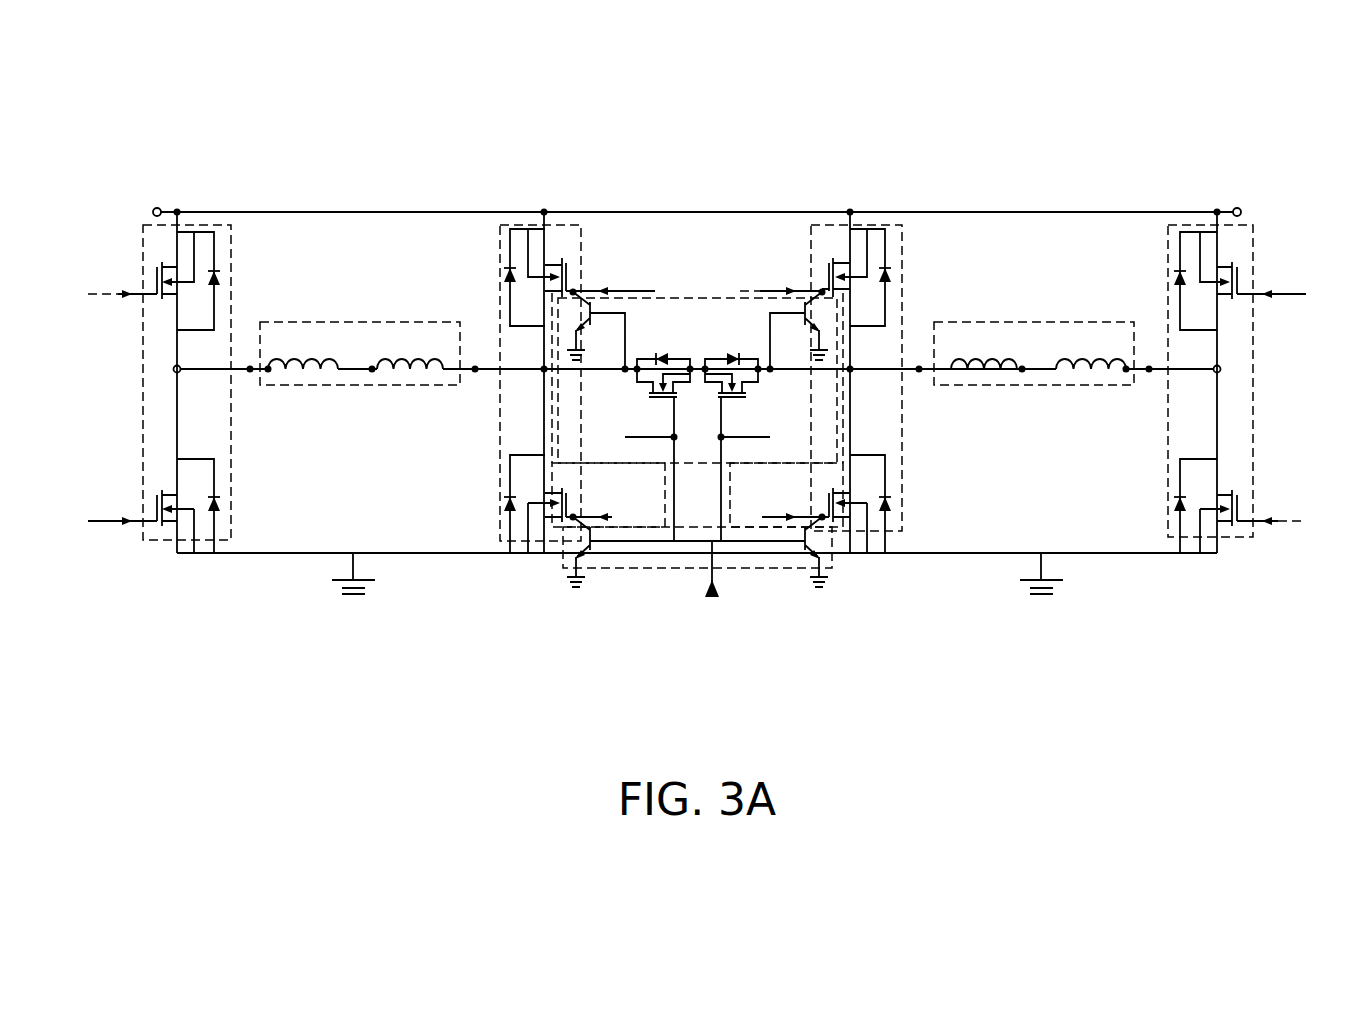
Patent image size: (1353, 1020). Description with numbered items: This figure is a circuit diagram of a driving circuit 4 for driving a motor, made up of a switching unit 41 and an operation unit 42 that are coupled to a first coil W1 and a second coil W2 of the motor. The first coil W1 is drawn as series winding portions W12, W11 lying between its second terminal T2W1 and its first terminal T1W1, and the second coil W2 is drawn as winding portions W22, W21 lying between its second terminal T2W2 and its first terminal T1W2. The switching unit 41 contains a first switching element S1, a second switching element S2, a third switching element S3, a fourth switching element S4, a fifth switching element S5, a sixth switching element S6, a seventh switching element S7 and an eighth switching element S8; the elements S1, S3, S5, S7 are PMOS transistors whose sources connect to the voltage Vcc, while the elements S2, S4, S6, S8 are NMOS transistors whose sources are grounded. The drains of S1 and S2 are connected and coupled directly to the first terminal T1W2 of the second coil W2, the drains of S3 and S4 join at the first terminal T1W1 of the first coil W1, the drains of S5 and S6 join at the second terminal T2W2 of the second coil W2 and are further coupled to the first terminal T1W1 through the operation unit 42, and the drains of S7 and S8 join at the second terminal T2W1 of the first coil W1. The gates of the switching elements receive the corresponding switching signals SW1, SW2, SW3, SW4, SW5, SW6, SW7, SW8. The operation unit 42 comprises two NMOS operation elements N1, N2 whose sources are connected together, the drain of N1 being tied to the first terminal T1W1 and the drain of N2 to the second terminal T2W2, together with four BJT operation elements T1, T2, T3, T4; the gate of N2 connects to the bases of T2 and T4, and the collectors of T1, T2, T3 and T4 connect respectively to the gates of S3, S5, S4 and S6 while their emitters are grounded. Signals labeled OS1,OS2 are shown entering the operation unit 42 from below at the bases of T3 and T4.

The driving circuit 4 is at (311, 104).
The switching unit 41 is at (699, 350).
The operation unit 42 is at (697, 445).
The first switching element S1 is at (1213, 281).
The second switching element S2 is at (1213, 506).
The third switching element S3 is at (541, 277).
The fourth switching element S4 is at (542, 504).
The fifth switching element S5 is at (854, 277).
The sixth switching element S6 is at (854, 504).
The seventh switching element S7 is at (183, 281).
The eighth switching element S8 is at (183, 506).
The switching signal SW1 is at (1279, 283).
The switching signal SW2 is at (1279, 509).
The switching signal SW3 is at (619, 281).
The switching signal SW4 is at (617, 506).
The switching signal SW5 is at (775, 280).
The switching signal SW6 is at (779, 504).
The switching signal SW7 is at (117, 282).
The switching signal SW8 is at (117, 511).
The operation element T1 is at (598, 331).
The operation element T2 is at (798, 331).
The operation element T3 is at (686, 551).
The operation element T4 is at (802, 551).
The operation element N1 is at (659, 447).
The operation element N2 is at (736, 447).
The first coil W1 is at (365, 372).
The second coil W2 is at (1035, 372).
The winding portion W11 is at (406, 351).
The winding portion W12 is at (302, 351).
The winding portion W21 is at (1093, 351).
The winding portion W22 is at (988, 351).
The first terminal of the first coil T1W1 is at (475, 366).
The second terminal of the first coil T2W1 is at (250, 366).
The first terminal of the second coil T1W2 is at (1149, 366).
The second terminal of the second coil T2W2 is at (919, 366).
The voltage Vcc is at (691, 210).
The output signals OS1,OS2 is at (712, 597).